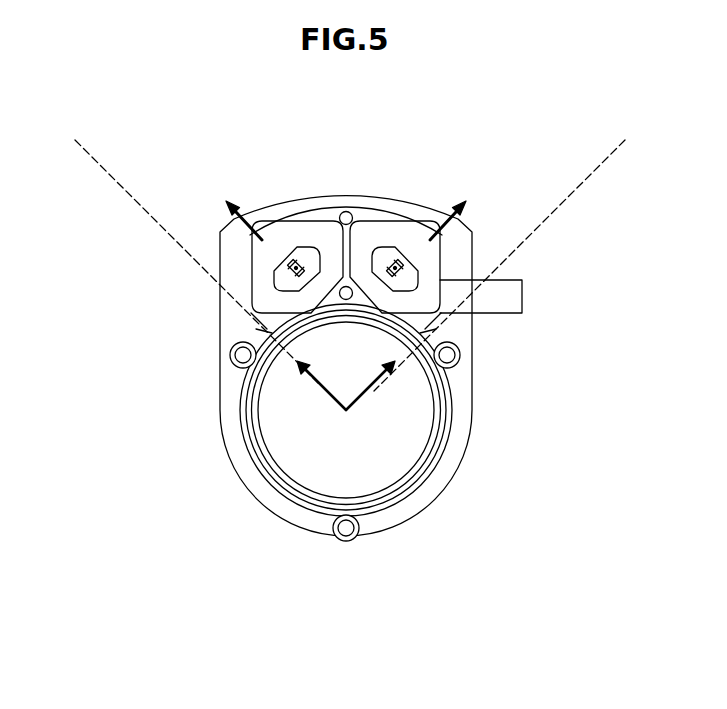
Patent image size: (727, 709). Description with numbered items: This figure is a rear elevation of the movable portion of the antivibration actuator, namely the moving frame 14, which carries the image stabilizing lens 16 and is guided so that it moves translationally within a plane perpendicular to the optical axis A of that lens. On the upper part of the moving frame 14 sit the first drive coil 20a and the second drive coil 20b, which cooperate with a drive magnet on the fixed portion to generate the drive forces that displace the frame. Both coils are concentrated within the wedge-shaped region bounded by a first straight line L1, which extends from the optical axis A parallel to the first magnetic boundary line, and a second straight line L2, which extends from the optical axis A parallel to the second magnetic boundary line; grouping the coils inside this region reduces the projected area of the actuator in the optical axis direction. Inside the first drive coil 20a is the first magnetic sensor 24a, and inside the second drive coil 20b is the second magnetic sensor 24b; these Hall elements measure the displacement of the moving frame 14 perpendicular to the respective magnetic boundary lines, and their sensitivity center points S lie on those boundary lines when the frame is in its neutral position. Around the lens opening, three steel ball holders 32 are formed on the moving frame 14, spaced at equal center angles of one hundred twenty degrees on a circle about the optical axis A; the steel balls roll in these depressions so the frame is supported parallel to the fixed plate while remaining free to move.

The moving frame 14 is at (248, 492).
The image stabilizing lens 16 is at (317, 467).
The first drive coil 20a is at (288, 233).
The second drive coil 20b is at (386, 232).
The first magnetic sensor 24a is at (290, 268).
The second magnetic sensor 24b is at (394, 261).
The steel ball holder 32 is at (230, 356).
The sensitivity center point S is at (300, 264).
The first straight line L1 is at (563, 201).
The second straight line L2 is at (135, 201).
The optical axis A is at (350, 423).